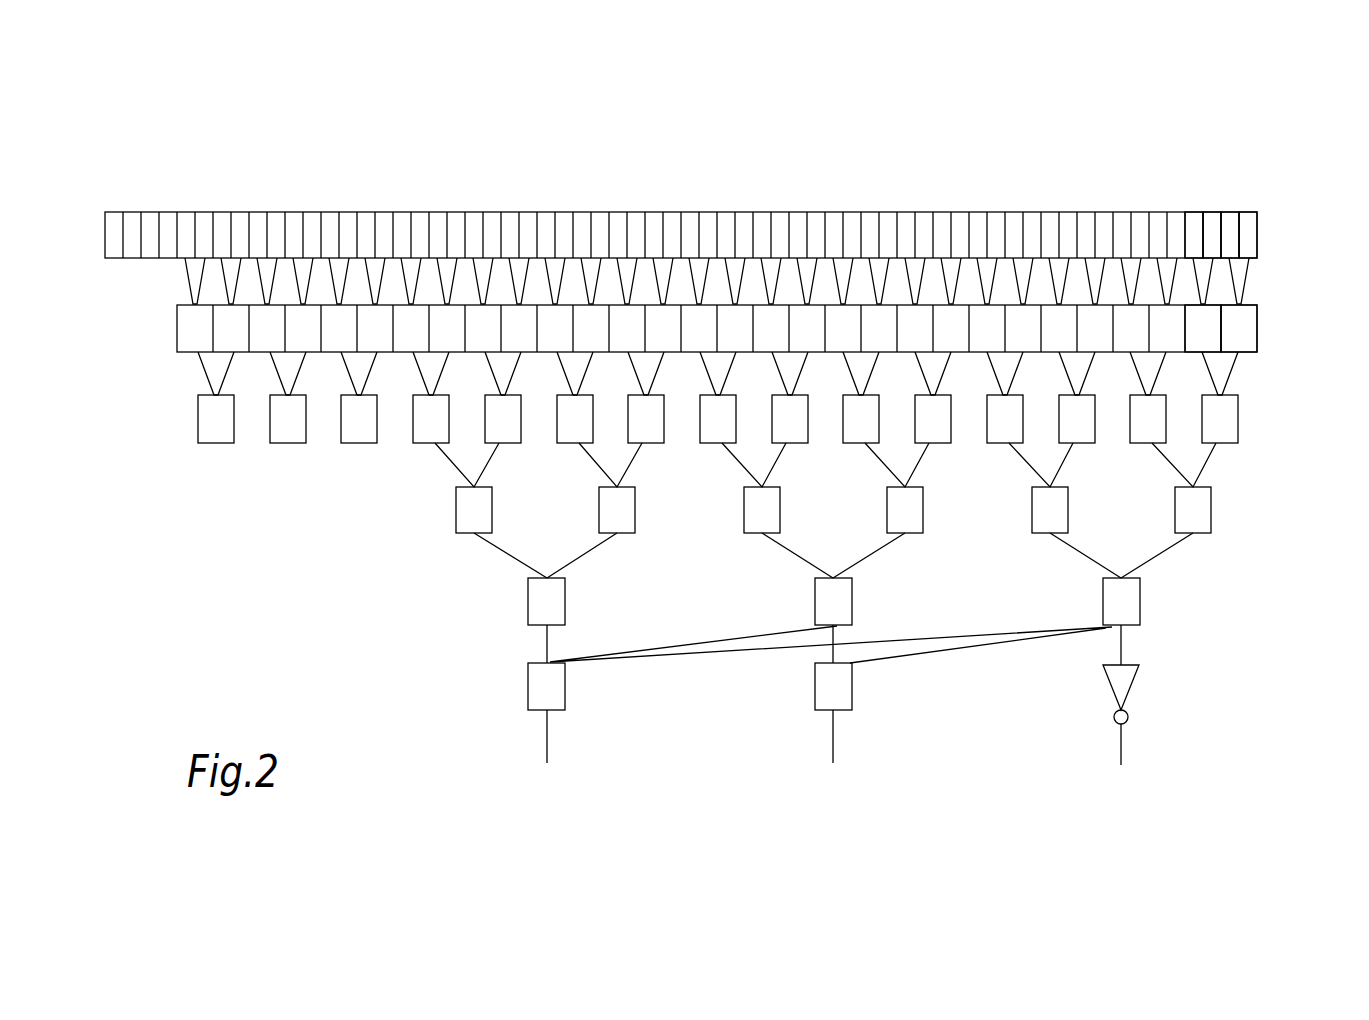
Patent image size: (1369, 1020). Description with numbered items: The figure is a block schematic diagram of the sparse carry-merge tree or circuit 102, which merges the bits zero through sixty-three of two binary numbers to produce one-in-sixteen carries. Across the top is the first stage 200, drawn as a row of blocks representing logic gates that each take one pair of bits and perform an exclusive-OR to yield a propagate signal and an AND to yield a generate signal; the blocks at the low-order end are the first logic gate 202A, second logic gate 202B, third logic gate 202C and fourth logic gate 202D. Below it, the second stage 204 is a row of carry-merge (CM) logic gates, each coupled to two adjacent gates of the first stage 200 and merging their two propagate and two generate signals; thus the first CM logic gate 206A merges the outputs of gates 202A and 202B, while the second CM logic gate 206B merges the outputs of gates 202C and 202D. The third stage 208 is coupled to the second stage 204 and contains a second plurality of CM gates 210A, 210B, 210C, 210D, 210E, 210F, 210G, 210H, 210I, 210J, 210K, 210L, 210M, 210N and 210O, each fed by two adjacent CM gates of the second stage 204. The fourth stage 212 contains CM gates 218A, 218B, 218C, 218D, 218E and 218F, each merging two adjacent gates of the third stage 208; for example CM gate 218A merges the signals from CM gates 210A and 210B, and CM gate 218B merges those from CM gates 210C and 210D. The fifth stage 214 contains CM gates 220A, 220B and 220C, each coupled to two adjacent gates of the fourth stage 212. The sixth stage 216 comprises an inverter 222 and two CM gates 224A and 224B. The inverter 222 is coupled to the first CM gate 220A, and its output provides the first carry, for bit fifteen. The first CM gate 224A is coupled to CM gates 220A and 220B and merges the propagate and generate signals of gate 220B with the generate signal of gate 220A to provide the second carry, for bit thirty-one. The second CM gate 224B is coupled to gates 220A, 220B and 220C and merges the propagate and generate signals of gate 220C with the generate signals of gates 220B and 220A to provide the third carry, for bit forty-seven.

The sparse carry-merge circuit 102 is at (127, 152).
The first stage 200 is at (1258, 237).
The first logic gate 202A is at (1248, 212).
The second logic gate 202B is at (1230, 212).
The third logic gate 202C is at (1212, 212).
The fourth logic gate 202D is at (1194, 212).
The second stage 204 is at (1258, 321).
The first CM logic gate 206A is at (1247, 305).
The second CM logic gate 206B is at (1208, 305).
The third stage 208 is at (1239, 421).
The CM logic gate 210A is at (1230, 444).
The CM logic gate 210B is at (1154, 444).
The CM logic gate 210C is at (1087, 444).
The CM logic gate 210D is at (1010, 444).
The CM logic gate 210E is at (940, 444).
The CM logic gate 210F is at (866, 444).
The CM logic gate 210G is at (798, 444).
The CM logic gate 210H is at (723, 444).
The CM logic gate 210I is at (655, 444).
The CM logic gate 210J is at (579, 444).
The CM logic gate 210K is at (512, 444).
The CM logic gate 210L is at (436, 444).
The CM logic gate 210M is at (368, 443).
The CM logic gate 210N is at (296, 443).
The CM logic gate 210O is at (225, 443).
The fourth stage 212 is at (1212, 509).
The CM gate 218A is at (1200, 533).
The CM gate 218B is at (1038, 533).
The CM gate 218C is at (909, 533).
The CM gate 218D is at (752, 533).
The CM gate 218E is at (622, 533).
The CM gate 218F is at (464, 533).
The fifth stage 214 is at (1140, 600).
The first CM gate 220A is at (1140, 623).
The second CM gate 220B is at (852, 601).
The third CM gate 220C is at (566, 601).
The inverter 222 is at (1137, 672).
The sixth stage 216 is at (1134, 690).
The first CM gate 224A is at (852, 690).
The second CM gate 224B is at (566, 689).